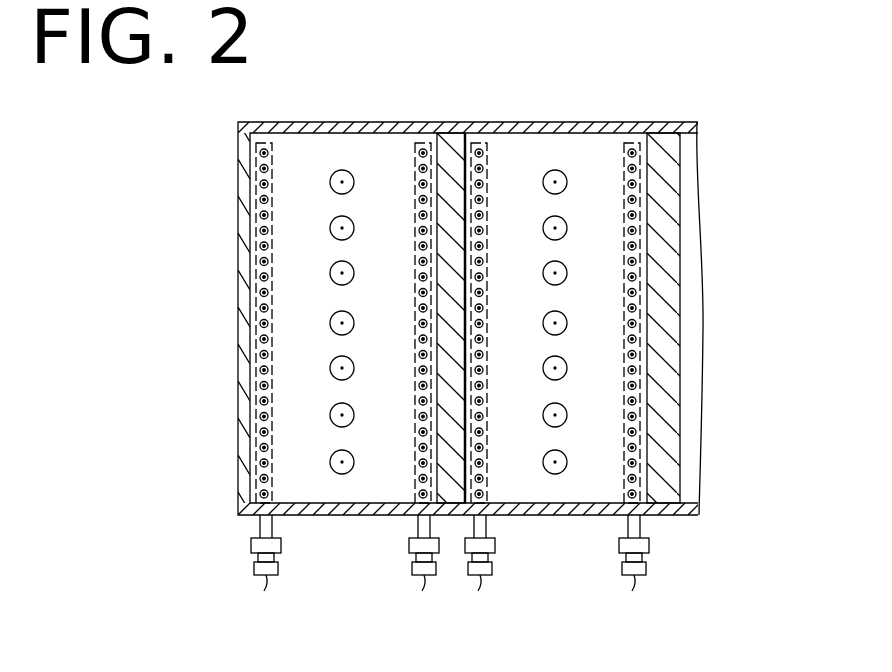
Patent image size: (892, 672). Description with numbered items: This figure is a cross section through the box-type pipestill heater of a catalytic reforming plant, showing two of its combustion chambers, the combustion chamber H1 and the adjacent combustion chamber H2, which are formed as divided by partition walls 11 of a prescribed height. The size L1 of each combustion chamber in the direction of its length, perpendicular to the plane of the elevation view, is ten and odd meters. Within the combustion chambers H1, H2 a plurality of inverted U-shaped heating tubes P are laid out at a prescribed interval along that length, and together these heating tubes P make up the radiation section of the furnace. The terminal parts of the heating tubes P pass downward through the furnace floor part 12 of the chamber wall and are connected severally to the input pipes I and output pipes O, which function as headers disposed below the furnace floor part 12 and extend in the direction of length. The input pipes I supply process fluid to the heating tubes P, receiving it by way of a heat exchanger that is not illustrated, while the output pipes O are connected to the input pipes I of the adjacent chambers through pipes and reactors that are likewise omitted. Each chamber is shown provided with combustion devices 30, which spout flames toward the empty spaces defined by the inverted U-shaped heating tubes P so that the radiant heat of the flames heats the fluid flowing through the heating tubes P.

The partition wall 11 is at (449, 150).
The furnace floor part 12 is at (315, 475).
The combustion device 30 is at (342, 182).
The heating tube P is at (262, 416).
The combustion chamber H1 is at (308, 281).
The combustion chamber H2 is at (604, 294).
The size of combustion chamber in direction of length L1 is at (238, 123).
The input pipe I is at (373, 571).
The output pipe O is at (529, 571).